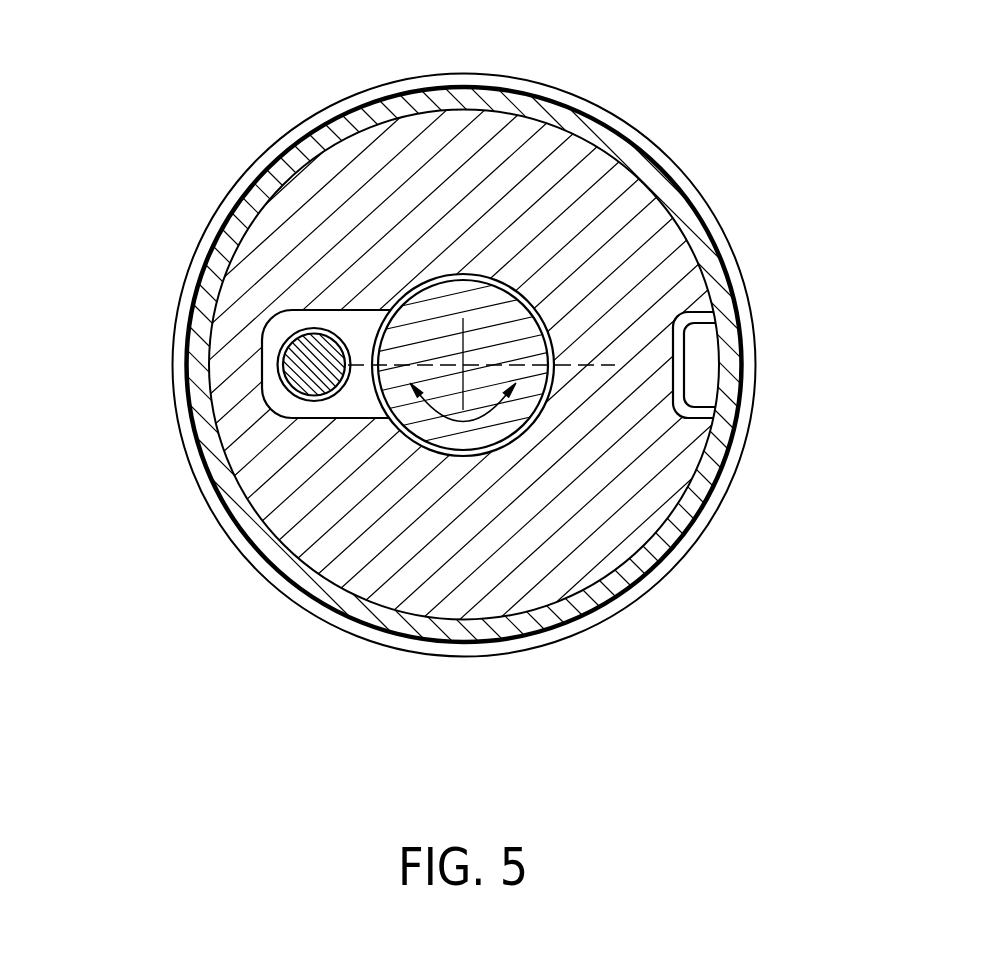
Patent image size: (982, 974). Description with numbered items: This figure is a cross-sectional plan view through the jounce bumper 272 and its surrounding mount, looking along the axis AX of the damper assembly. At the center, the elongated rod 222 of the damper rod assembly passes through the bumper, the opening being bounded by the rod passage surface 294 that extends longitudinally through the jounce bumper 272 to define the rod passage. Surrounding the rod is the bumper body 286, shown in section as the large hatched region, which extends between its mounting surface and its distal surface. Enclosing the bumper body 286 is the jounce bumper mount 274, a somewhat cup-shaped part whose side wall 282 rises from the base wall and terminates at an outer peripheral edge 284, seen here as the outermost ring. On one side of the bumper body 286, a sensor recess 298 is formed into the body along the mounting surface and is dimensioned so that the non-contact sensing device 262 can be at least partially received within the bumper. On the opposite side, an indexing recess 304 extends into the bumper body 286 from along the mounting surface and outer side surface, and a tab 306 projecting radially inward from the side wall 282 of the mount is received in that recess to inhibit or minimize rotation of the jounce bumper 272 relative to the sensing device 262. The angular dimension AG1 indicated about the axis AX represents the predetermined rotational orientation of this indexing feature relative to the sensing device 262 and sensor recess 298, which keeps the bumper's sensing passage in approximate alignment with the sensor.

The elongated rod 222 is at (488, 425).
The non-contact sensing device 262 is at (269, 411).
The jounce bumper 272 is at (463, 116).
The jounce bumper mount 274 is at (694, 164).
The side wall 282 is at (620, 139).
The outer peripheral edge 284 is at (740, 260).
The bumper body 286 is at (393, 170).
The rod passage surface 294 is at (450, 455).
The sensor recess 298 is at (344, 421).
The indexing recess 304 is at (697, 426).
The tab 306 is at (702, 362).
The axis AX is at (467, 363).
The angular dimension AG1 is at (505, 408).